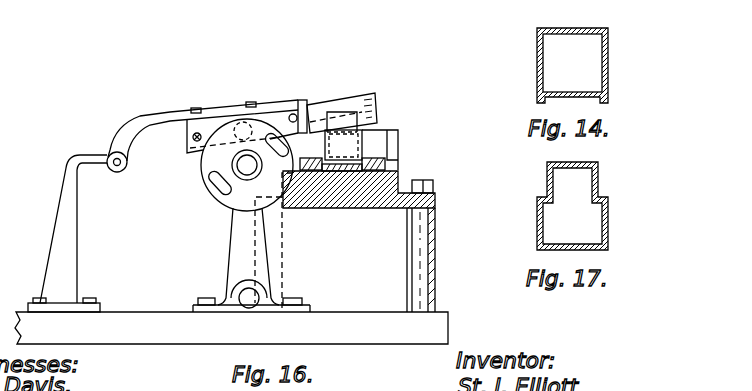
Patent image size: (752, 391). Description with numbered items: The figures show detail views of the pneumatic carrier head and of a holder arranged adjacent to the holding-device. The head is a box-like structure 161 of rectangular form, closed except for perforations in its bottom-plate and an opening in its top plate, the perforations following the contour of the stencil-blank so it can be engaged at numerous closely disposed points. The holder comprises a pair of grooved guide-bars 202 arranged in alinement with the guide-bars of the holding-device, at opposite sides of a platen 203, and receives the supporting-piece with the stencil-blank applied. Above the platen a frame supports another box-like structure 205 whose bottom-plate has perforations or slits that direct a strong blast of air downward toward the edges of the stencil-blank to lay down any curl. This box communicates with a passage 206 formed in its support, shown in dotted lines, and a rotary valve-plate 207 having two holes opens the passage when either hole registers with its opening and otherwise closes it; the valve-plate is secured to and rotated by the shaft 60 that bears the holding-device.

In FIG. 16, the shaft 60 is at (247, 166).
In FIG. 14, the box-like structure 161 is at (612, 53).
In FIG. 16, the grooved guide-bars 202 is at (303, 160).
In FIG. 16, the platen 203 is at (352, 178).
In FIG. 16, the box-like structure 205 is at (350, 147).
In FIG. 17, the box-like structure 205 is at (550, 193).
In FIG. 16, the passage 206 is at (318, 110).
In FIG. 16, the rotary valve-plate 207 is at (213, 160).